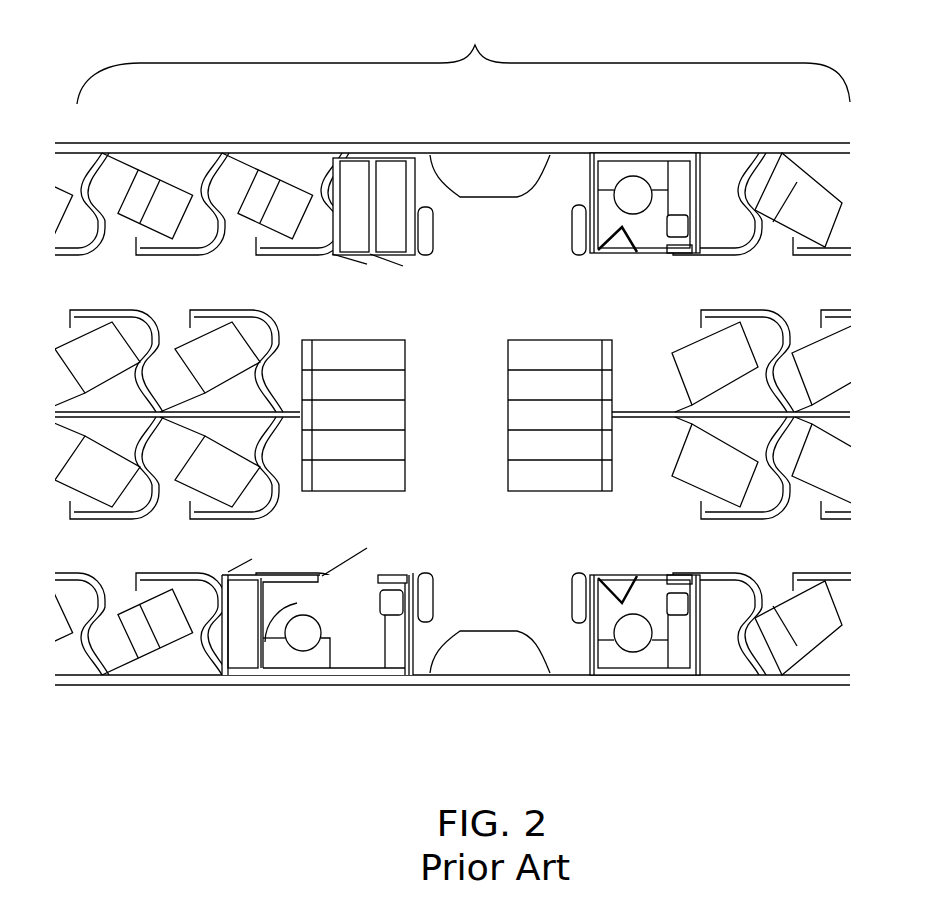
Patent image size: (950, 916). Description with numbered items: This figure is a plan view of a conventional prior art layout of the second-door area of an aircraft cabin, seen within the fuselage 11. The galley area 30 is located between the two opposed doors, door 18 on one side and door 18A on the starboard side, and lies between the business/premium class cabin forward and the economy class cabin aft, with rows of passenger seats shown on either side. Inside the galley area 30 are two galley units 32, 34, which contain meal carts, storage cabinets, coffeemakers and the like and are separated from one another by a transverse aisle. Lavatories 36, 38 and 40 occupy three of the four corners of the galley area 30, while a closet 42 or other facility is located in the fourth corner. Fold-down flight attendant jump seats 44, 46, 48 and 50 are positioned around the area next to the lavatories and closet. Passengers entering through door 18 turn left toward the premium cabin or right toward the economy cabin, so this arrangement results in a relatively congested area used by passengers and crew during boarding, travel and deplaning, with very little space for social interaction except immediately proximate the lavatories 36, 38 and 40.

The fuselage 11 is at (113, 141).
The galley area 30 is at (463, 61).
The galley unit 32 is at (358, 352).
The galley unit 34 is at (558, 352).
The closet 42 is at (385, 182).
The flight attendant jump seat 44 is at (427, 205).
The door 18 is at (503, 173).
The door 18A is at (482, 665).
The lavatory 36 is at (633, 190).
The flight attendant jump seat 46 is at (577, 230).
The lavatory 38 is at (640, 604).
The flight attendant jump seat 50 is at (576, 603).
The lavatory 40 is at (263, 618).
The flight attendant jump seat 48 is at (436, 602).